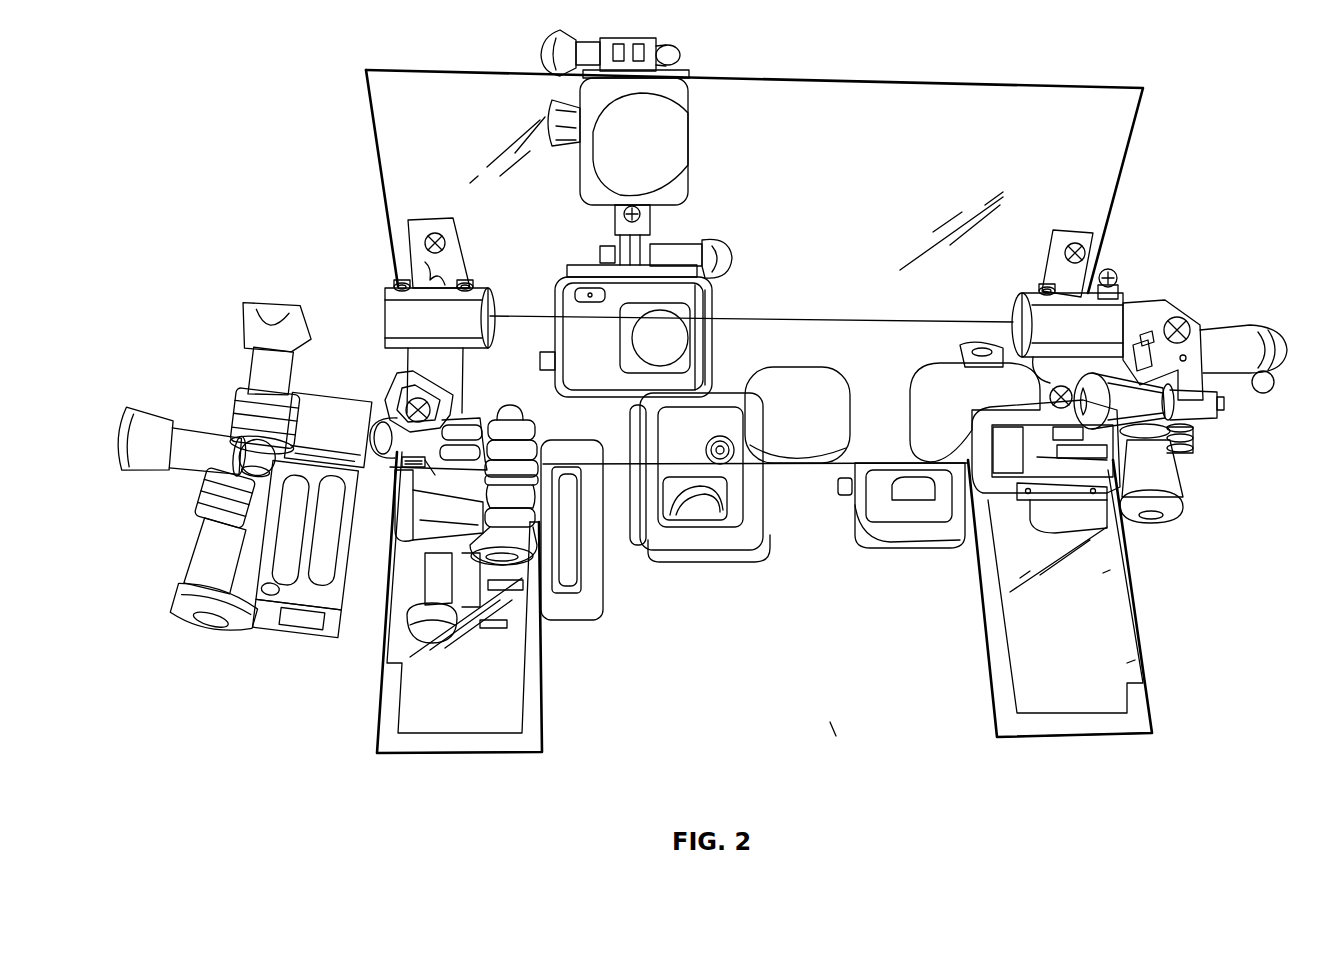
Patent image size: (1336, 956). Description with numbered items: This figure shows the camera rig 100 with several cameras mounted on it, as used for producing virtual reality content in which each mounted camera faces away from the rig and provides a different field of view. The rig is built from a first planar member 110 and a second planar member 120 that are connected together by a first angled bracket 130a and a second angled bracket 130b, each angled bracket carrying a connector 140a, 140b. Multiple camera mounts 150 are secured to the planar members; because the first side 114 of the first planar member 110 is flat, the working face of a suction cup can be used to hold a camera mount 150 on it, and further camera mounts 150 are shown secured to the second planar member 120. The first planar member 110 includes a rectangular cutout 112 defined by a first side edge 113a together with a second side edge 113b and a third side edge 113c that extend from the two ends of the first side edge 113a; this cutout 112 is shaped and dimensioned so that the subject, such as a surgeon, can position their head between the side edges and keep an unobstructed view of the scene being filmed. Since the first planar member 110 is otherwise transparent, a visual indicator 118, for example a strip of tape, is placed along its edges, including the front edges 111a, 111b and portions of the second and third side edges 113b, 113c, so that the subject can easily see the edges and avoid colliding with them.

The camera rig 100 is at (1103, 573).
The first planar member 110 is at (1127, 663).
The front edge 111a is at (458, 755).
The front edge 111b is at (1117, 737).
The rectangular cutout 112 is at (841, 726).
The first side edge 113a is at (822, 466).
The second side edge 113b is at (543, 720).
The third side edge 113c is at (990, 667).
The first side 114 is at (1100, 630).
The visual indicator 118 is at (535, 688).
The second planar member 120 is at (1118, 146).
The first angled bracket 130a is at (400, 238).
The second angled bracket 130b is at (1090, 233).
The connector 140a is at (386, 293).
The connector 140b is at (1122, 295).
The camera mount 150 is at (650, 48).